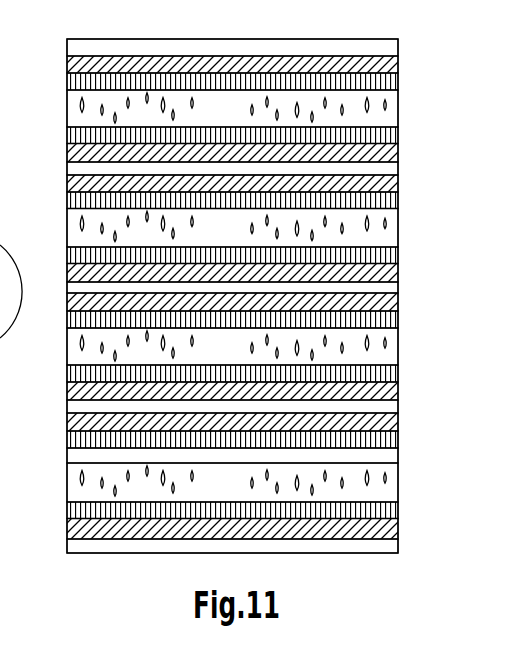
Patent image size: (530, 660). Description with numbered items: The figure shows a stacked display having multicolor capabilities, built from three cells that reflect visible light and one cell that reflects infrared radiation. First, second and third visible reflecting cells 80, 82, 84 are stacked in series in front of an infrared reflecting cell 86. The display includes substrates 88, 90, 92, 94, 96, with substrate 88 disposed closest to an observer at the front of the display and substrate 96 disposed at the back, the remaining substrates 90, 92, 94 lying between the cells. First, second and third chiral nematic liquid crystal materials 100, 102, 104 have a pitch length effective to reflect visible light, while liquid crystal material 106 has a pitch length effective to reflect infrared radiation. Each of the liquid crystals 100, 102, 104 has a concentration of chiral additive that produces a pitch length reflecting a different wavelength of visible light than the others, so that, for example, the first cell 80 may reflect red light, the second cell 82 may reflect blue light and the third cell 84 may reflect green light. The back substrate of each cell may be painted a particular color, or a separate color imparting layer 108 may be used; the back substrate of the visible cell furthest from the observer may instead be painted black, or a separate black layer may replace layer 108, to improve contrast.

The first visible reflecting cell 80 is at (260, 109).
The second visible reflecting cell 82 is at (262, 228).
The third visible reflecting cell 84 is at (262, 346).
The infrared reflecting cell 86 is at (231, 478).
The substrate 88 is at (75, 48).
The substrate 90 is at (73, 168).
The substrate 92 is at (75, 290).
The substrate 94 is at (80, 408).
The substrate 96 is at (83, 547).
The first chiral nematic liquid crystal material 100 is at (244, 116).
The second chiral nematic liquid crystal material 102 is at (244, 235).
The third chiral nematic liquid crystal material 104 is at (244, 354).
The liquid crystal material 106 is at (244, 495).
The color imparting layer 108 is at (82, 459).